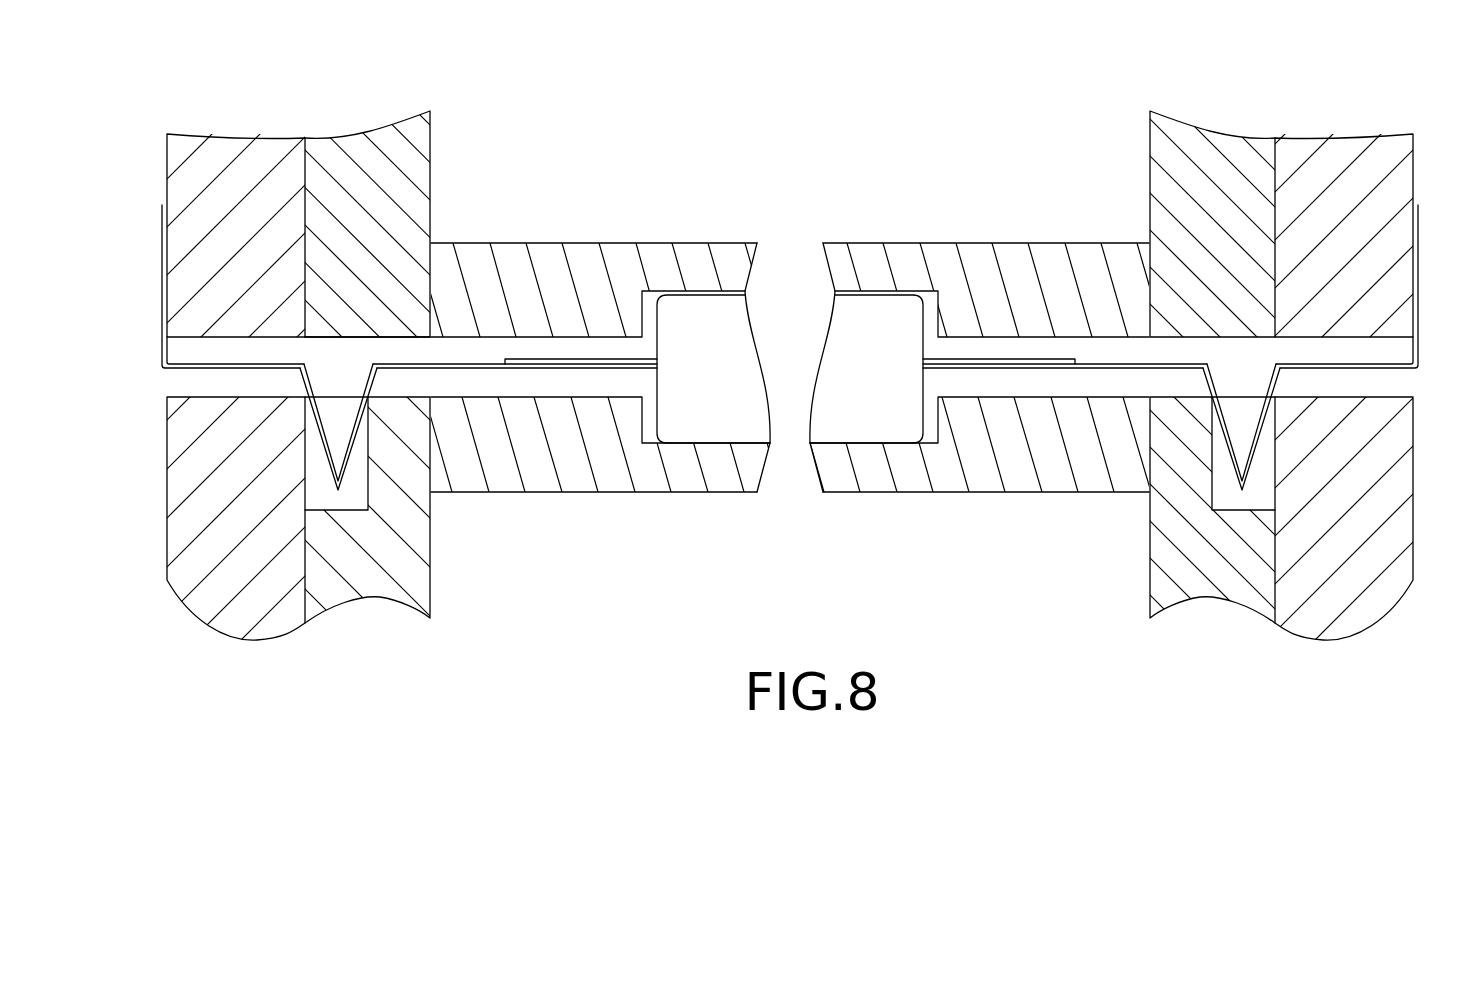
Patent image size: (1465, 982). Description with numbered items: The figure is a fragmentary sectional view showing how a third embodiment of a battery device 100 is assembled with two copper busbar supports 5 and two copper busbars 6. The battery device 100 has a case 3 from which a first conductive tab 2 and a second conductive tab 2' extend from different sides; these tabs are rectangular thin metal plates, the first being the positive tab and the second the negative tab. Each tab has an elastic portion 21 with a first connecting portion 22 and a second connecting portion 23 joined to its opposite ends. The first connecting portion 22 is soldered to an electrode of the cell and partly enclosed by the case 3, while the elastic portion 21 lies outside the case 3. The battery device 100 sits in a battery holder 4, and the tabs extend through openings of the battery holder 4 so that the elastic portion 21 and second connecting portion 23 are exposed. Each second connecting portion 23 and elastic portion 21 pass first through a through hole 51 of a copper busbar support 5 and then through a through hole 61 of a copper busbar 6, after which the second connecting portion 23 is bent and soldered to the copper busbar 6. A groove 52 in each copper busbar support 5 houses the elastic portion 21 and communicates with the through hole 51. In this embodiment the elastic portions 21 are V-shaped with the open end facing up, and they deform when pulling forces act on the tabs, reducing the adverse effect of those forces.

The battery device 100 is at (695, 293).
The first conductive tab 2 is at (1021, 278).
The second conductive tab 2' is at (567, 279).
The elastic portion 21 is at (338, 490).
The first connecting portion 22 is at (460, 370).
The second connecting portion 23 is at (162, 234).
The case 3 is at (722, 293).
The battery holder 4 is at (598, 243).
The copper busbar support 5 is at (363, 153).
The through hole 51 is at (386, 362).
The groove 52 is at (358, 500).
The copper busbar 6 is at (230, 153).
The through hole 61 is at (187, 383).